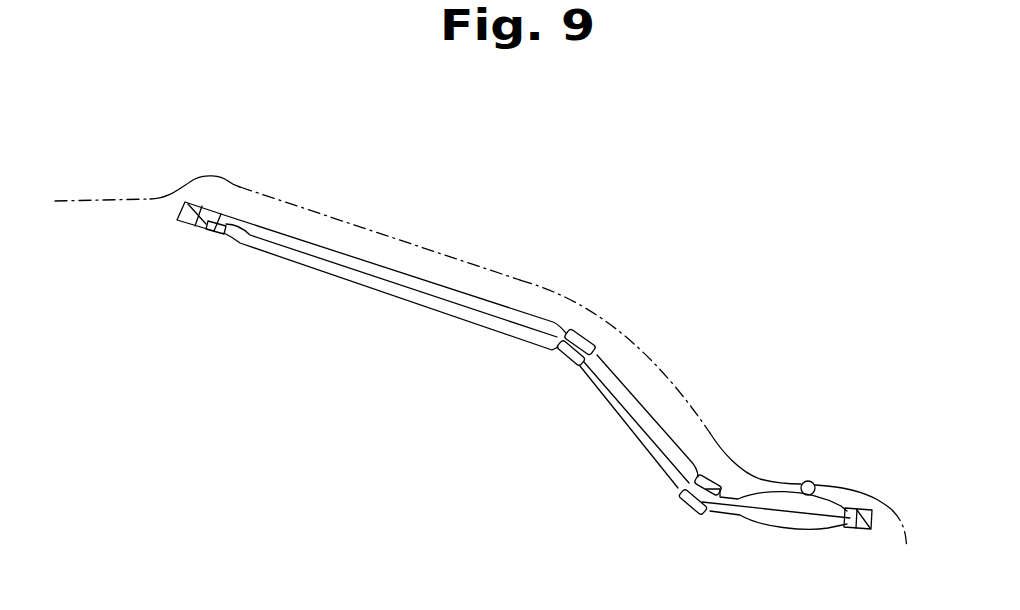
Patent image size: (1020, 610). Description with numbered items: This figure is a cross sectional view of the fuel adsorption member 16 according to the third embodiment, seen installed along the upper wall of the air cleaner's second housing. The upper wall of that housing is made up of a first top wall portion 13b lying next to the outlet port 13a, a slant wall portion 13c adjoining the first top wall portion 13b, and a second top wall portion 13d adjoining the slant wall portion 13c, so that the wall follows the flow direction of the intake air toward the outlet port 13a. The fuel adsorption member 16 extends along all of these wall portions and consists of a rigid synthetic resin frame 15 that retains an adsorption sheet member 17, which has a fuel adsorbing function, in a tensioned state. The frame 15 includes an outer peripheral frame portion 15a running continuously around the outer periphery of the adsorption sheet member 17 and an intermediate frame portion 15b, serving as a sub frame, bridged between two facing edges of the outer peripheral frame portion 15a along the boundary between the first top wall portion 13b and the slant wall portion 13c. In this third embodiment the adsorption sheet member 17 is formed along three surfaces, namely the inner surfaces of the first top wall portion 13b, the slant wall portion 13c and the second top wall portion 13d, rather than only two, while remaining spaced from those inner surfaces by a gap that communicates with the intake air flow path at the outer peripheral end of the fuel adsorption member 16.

The outlet port 13a is at (105, 202).
The first top wall portion 13b is at (428, 248).
The slant wall portion 13c is at (686, 409).
The second top wall portion 13d is at (806, 480).
The frame 15 is at (235, 187).
The outer peripheral frame portion 15a is at (196, 223).
The intermediate frame portion 15b is at (559, 344).
The fuel adsorption member 16 is at (353, 252).
The adsorption sheet member 17 is at (632, 380).